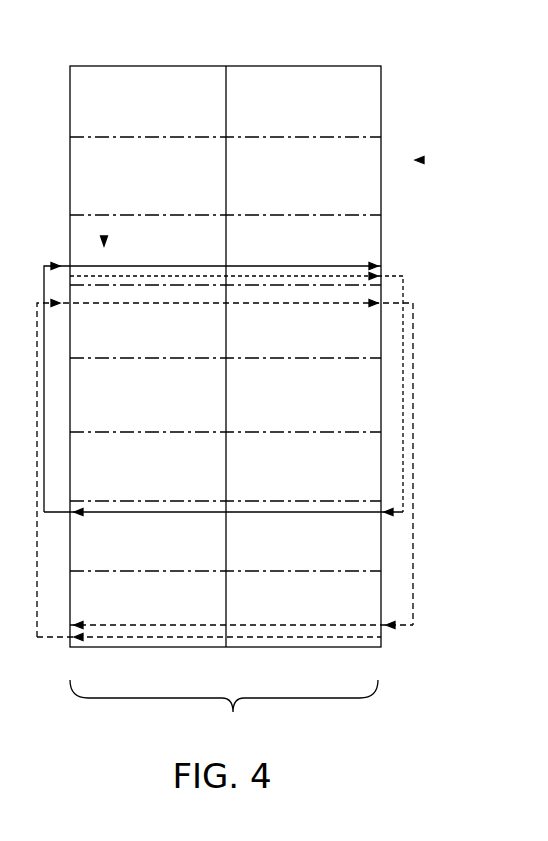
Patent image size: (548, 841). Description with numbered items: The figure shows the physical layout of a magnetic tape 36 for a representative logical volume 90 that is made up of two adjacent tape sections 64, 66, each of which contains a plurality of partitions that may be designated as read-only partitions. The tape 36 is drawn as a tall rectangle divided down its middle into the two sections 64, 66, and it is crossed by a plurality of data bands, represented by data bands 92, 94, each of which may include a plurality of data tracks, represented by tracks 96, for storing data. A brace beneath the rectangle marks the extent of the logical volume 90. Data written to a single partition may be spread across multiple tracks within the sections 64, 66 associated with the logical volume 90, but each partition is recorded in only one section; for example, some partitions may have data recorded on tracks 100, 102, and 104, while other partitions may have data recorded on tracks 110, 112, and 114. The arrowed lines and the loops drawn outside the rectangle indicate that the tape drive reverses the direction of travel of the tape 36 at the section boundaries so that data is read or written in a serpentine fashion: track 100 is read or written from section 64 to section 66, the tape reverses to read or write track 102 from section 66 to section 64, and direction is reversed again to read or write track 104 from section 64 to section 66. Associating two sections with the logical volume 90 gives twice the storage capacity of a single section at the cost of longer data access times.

The magnetic tape 36 is at (420, 159).
The tape section 64 is at (146, 66).
The tape section 66 is at (302, 66).
The data band 92 is at (75, 105).
The data band 94 is at (75, 175).
The data tracks 96 is at (105, 236).
The track 100 is at (298, 276).
The track 102 is at (296, 512).
The track 104 is at (345, 266).
The track 110 is at (295, 647).
The track 112 is at (311, 305).
The track 114 is at (300, 622).
The logical volume 90 is at (224, 711).